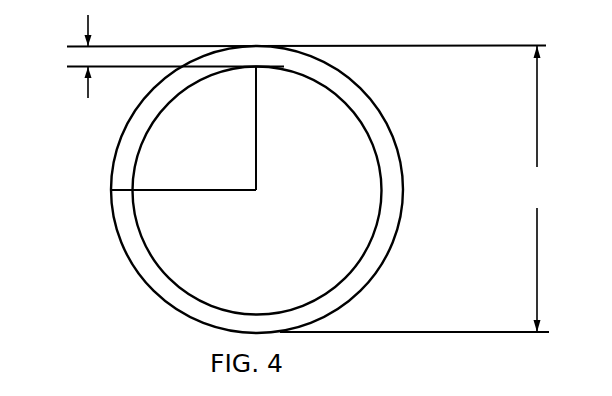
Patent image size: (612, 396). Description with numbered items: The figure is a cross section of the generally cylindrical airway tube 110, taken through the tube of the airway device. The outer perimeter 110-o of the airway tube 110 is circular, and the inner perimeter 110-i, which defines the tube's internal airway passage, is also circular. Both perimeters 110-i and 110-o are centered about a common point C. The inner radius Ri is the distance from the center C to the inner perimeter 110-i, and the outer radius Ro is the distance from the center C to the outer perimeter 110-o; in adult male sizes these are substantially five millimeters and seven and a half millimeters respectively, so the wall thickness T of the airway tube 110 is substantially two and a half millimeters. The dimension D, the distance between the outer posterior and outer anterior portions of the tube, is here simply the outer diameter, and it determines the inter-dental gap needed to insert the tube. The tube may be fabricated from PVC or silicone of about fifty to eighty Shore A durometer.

The airway tube 110 is at (254, 202).
The outer perimeter 110-o is at (404, 198).
The inner perimeter 110-i is at (381, 200).
The thickness T is at (289, 56).
The distance D is at (414, 189).
The common point C is at (257, 190).
The inner radius Ri is at (257, 133).
The outer radius Ro is at (210, 189).